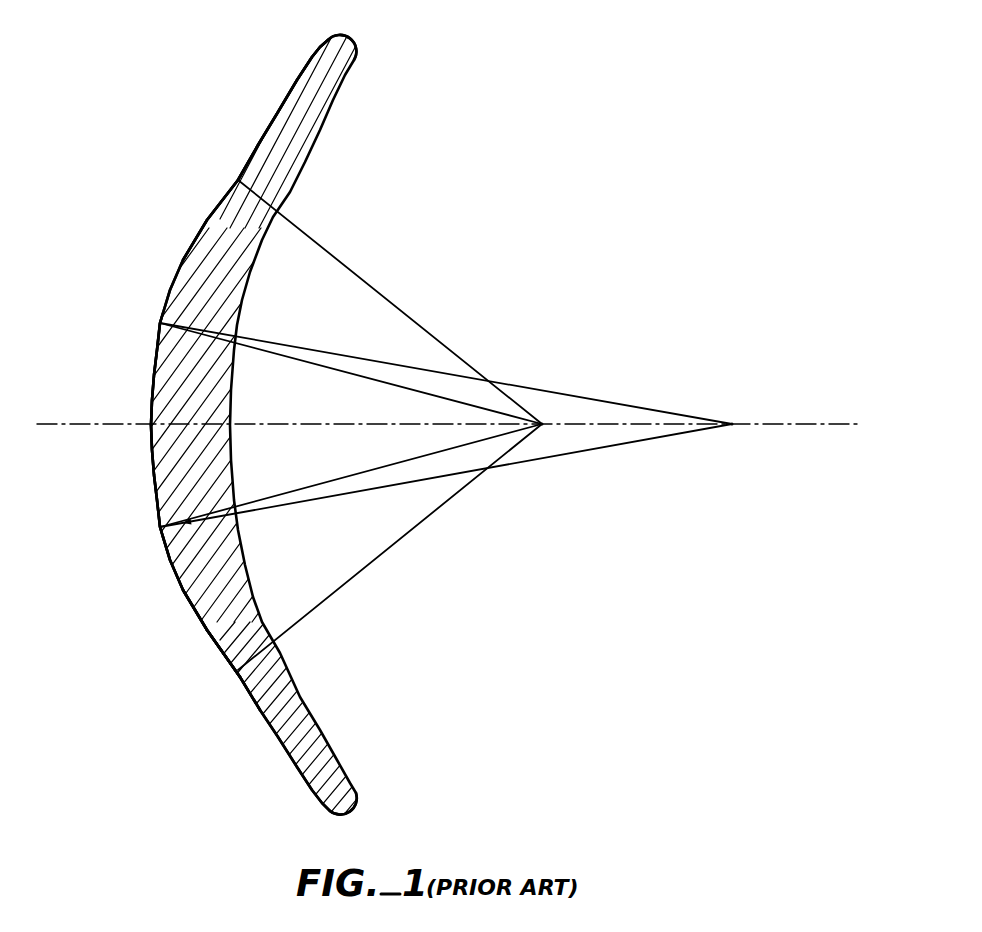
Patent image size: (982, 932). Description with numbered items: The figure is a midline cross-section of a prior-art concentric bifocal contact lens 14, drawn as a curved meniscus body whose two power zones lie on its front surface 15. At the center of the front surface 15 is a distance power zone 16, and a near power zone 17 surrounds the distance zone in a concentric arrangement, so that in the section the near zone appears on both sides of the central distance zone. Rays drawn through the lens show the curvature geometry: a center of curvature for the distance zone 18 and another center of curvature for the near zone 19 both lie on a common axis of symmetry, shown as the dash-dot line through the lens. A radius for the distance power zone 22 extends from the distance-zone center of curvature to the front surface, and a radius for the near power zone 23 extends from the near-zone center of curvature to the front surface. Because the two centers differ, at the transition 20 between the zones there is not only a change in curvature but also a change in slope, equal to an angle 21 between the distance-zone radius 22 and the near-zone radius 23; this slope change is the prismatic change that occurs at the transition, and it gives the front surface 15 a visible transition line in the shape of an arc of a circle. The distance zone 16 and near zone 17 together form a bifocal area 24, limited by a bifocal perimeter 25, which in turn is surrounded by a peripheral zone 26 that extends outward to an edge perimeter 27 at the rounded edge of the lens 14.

The concentric bifocal contact lens 14 is at (274, 751).
The front surface 15 is at (313, 792).
The distance power zone 16 is at (150, 388).
The near power zone 17 is at (207, 213).
The center of curvature for the distance zone 18 is at (735, 425).
The center of curvature for the near zone 19 is at (543, 425).
The transition 20 is at (158, 320).
The angle 21 is at (285, 505).
The radius for the distance power zone 22 is at (590, 398).
The radius for the near power zone 23 is at (353, 272).
The bifocal area 24 is at (192, 607).
The bifocal perimeter 25 is at (239, 675).
The peripheral zone 26 is at (307, 63).
The edge perimeter 27 is at (350, 36).